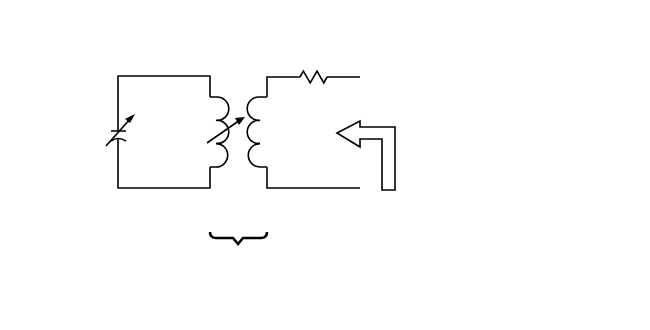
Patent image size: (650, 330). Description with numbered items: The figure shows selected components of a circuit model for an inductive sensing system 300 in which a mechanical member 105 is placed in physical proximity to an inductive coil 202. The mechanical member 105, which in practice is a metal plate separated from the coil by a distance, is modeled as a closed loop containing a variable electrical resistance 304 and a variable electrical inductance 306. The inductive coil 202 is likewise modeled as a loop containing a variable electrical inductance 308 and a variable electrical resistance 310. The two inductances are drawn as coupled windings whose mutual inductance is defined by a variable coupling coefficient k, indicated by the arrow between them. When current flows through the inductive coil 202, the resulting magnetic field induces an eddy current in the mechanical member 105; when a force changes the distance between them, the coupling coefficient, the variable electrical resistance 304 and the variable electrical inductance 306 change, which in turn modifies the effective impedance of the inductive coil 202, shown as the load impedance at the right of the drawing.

The inductive sensing system 300 is at (440, 95).
The mechanical member 105 is at (118, 197).
The variable electrical resistance 304 is at (112, 129).
The variable electrical inductance 306 is at (216, 96).
The inductive coil 202 is at (360, 197).
The variable electrical resistance 310 is at (315, 68).
The variable electrical inductance 308 is at (257, 170).